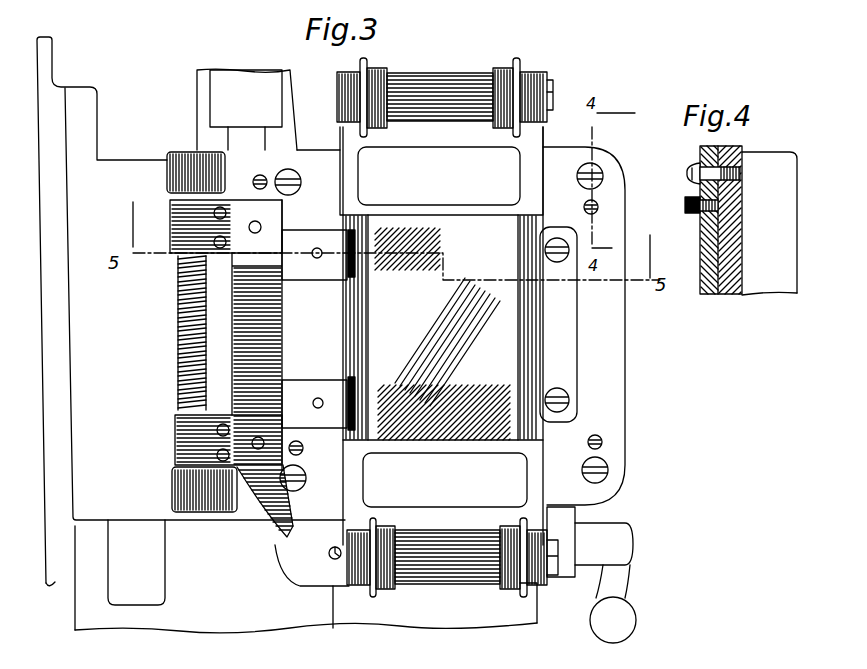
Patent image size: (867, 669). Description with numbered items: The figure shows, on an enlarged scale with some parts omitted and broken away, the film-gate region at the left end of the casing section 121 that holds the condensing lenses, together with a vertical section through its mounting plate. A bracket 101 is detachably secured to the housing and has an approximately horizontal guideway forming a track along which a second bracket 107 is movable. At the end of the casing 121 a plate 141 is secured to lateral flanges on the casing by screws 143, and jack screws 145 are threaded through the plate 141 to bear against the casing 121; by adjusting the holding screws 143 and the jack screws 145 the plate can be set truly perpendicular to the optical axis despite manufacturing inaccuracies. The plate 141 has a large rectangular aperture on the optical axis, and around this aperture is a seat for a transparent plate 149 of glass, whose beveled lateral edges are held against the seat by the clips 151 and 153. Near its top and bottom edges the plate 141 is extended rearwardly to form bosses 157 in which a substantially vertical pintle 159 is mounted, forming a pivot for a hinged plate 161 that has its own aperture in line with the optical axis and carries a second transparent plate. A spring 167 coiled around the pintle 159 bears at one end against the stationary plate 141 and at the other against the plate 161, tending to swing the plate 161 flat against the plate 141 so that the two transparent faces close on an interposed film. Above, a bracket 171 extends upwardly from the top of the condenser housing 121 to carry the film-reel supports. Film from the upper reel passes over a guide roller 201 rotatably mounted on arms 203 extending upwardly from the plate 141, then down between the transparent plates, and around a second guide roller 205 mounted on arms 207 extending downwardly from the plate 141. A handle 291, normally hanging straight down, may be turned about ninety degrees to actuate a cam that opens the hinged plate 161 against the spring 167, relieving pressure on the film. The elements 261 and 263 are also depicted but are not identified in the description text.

In FIG. 3, the bracket 101 is at (55, 585).
In FIG. 3, the second bracket 107 is at (73, 461).
In FIG. 4, the casing section 121 is at (735, 292).
In FIG. 3, the plate 141 is at (622, 417).
In FIG. 4, the plate 141 is at (700, 295).
In FIG. 3, the screws 143 is at (293, 176).
In FIG. 4, the screws 143 is at (688, 170).
In FIG. 3, the jack screws 145 is at (260, 175).
In FIG. 4, the jack screws 145 is at (685, 201).
In FIG. 3, the transparent plate 149 is at (442, 334).
In FIG. 3, the clip 151 is at (566, 321).
In FIG. 3, the clip 153 is at (336, 280).
In FIG. 3, the bosses 157 is at (167, 173).
In FIG. 3, the pintle 159 is at (178, 413).
In FIG. 3, the plate 161 is at (328, 343).
In FIG. 3, the spring 167 is at (178, 342).
In FIG. 3, the bracket 171 is at (289, 93).
In FIG. 3, the guide roller 201 is at (465, 75).
In FIG. 3, the arms 203 is at (548, 141).
In FIG. 3, the guide roller 205 is at (452, 573).
In FIG. 3, the arms 207 is at (363, 493).
In FIG. 3, the pivot pin 261 is at (329, 553).
In FIG. 3, the blade 263 is at (268, 488).
In FIG. 3, the handle 291 is at (623, 603).